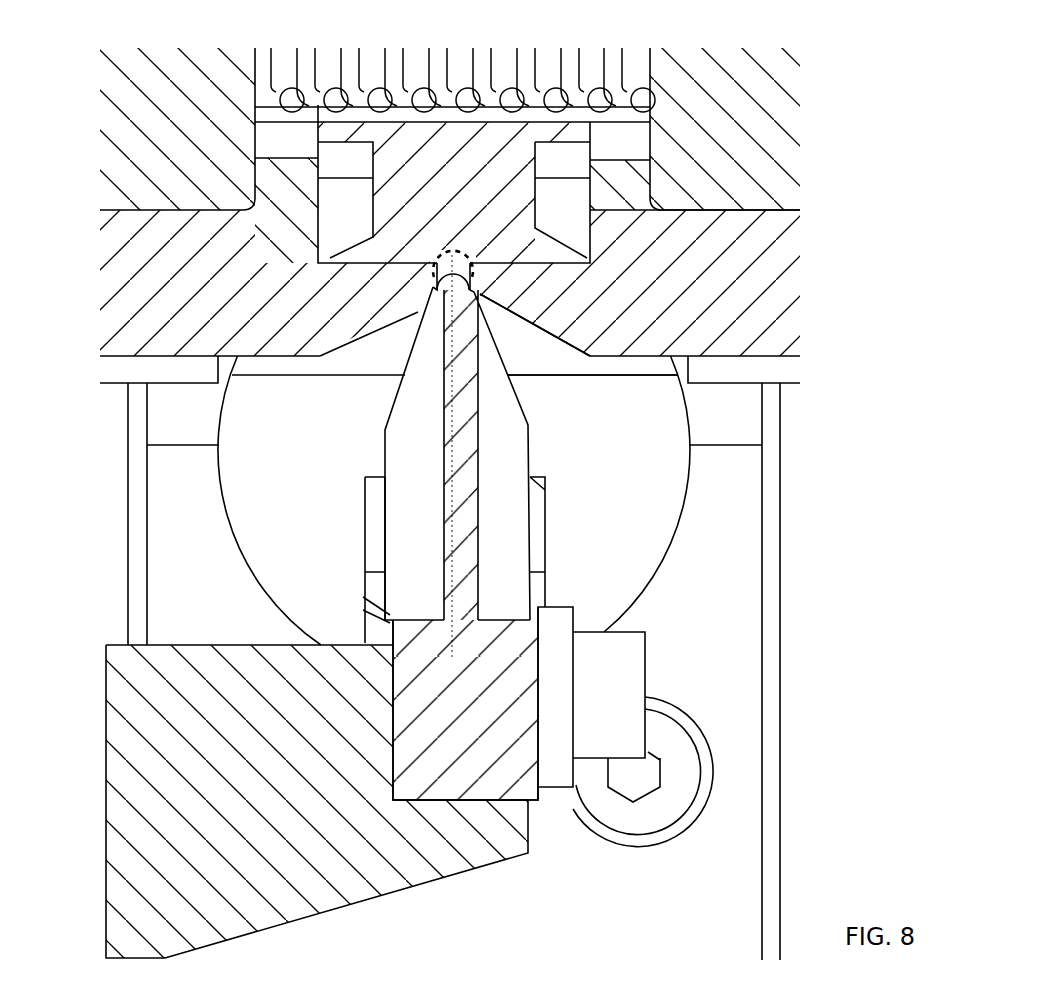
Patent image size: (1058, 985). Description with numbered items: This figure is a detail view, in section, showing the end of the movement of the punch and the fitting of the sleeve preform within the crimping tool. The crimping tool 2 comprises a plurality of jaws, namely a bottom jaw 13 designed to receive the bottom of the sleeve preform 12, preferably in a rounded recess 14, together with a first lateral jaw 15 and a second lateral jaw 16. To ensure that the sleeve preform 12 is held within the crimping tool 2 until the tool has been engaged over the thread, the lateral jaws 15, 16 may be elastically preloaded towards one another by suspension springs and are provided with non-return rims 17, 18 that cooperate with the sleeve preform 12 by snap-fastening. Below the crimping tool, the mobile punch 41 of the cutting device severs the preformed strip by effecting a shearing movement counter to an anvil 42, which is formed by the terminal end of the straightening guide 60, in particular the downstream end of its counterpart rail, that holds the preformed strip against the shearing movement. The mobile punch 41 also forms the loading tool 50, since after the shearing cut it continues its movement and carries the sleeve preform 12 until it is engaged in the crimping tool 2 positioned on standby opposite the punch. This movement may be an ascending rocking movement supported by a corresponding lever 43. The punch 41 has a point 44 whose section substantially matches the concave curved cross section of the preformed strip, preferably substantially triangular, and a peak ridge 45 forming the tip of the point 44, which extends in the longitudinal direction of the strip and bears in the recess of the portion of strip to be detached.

The crimping tool 2 is at (697, 175).
The sleeve preform 12 is at (448, 248).
The bottom jaw 13 is at (437, 185).
The rounded recess 14 is at (455, 262).
The first lateral jaw 15 is at (597, 277).
The second lateral jaw 16 is at (292, 258).
The non-return rim 17 is at (472, 288).
The non-return rim 18 is at (432, 288).
The mobile punch 41 is at (505, 355).
The anvil 42 is at (540, 465).
The lever 43 is at (260, 742).
The point 44 is at (418, 312).
The peak ridge 45 is at (452, 465).
The loading tool 50 is at (505, 355).
The straightening guide 60 is at (540, 465).